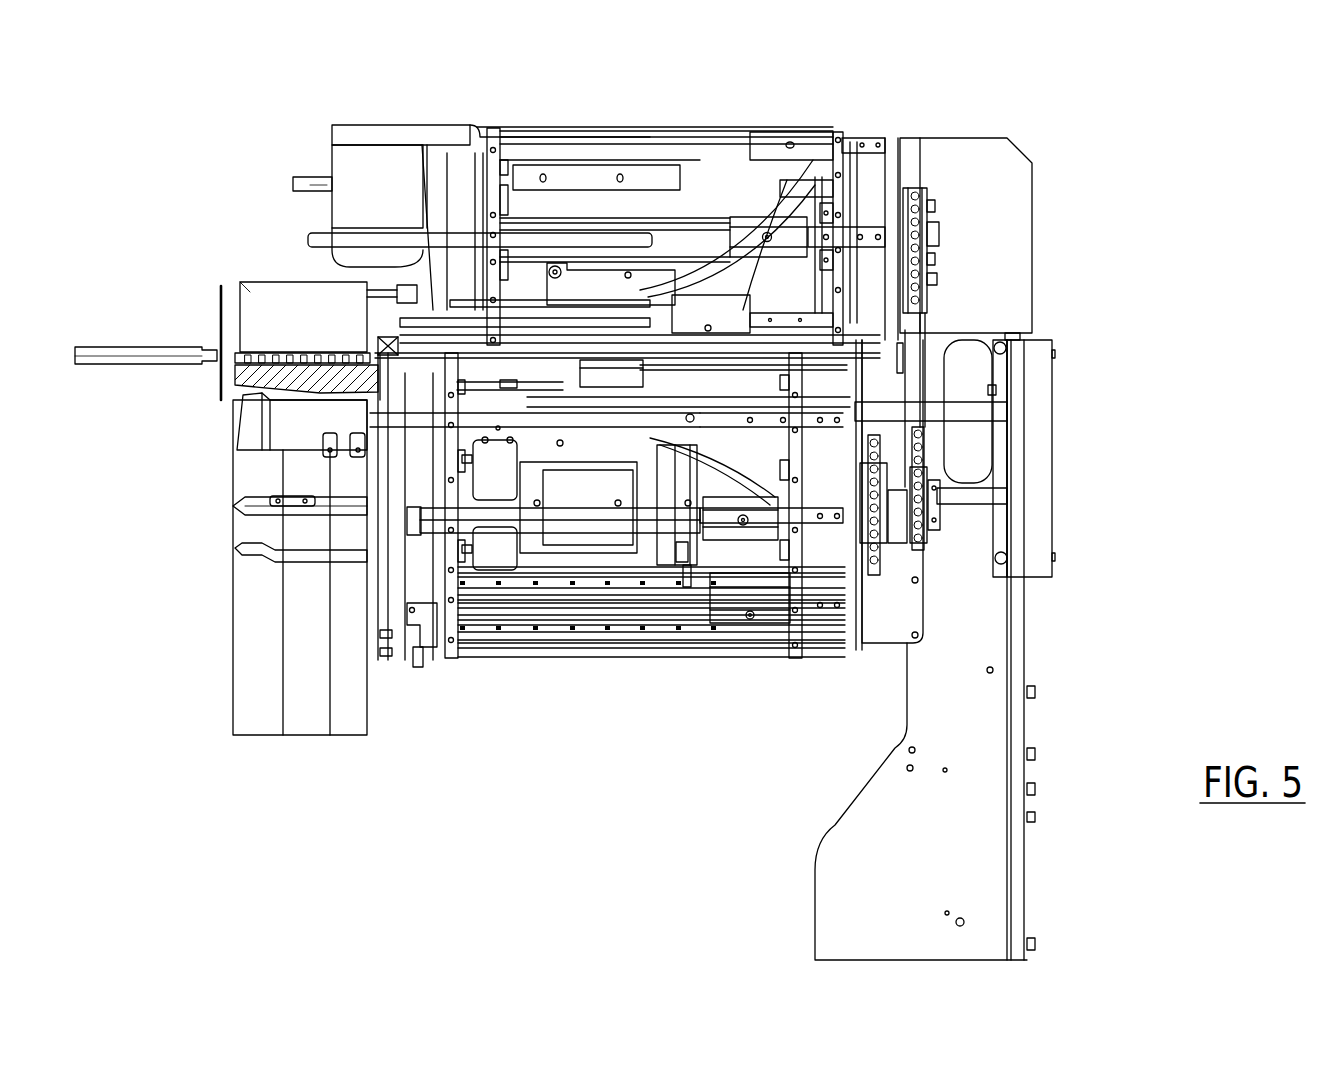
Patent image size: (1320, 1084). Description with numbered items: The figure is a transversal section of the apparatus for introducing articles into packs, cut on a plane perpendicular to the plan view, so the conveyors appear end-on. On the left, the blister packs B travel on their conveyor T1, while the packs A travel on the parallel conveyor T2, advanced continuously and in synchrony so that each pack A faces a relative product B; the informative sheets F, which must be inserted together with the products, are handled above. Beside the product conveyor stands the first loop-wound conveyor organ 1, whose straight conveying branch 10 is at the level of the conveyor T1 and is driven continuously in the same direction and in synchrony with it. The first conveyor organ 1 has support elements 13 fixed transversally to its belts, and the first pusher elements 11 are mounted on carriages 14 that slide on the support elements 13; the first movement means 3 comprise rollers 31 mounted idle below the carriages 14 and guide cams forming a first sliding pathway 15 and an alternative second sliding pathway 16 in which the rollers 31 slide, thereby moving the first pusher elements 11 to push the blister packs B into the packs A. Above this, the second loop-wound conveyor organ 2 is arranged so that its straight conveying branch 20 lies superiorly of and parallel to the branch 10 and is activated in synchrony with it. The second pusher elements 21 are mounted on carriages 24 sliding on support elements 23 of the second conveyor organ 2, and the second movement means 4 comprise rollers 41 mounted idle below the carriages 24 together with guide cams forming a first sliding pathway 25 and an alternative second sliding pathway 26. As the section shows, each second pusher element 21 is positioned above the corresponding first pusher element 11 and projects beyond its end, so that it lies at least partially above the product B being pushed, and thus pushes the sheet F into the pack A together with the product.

The pack A is at (100, 347).
The sheet F is at (222, 347).
The blister pack B is at (228, 352).
The second pusher element 21 is at (314, 350).
The conveyor of the products T1 is at (233, 393).
The conveyor of the packs T2 is at (228, 363).
The straight conveying branch of the second conveyor organ 20 is at (508, 345).
The second loop-wound conveyor organ 2 is at (860, 131).
The second movement means 4 is at (645, 288).
The second sliding pathway 26 is at (750, 290).
The carriage 24 is at (827, 197).
The first sliding pathway 25 is at (932, 207).
The roller 41 is at (935, 260).
The support element 23 is at (862, 349).
The first loop-wound conveyor organ 1 is at (925, 310).
The second sliding pathway 16 is at (858, 403).
The support element 13 is at (767, 427).
The first sliding pathway 15 is at (823, 620).
The first pusher element 11 is at (377, 468).
The straight conveying branch of the first conveyor organ 10 is at (453, 660).
The carriage 14 is at (605, 372).
The first movement means 3 is at (570, 403).
The roller 31 is at (612, 392).